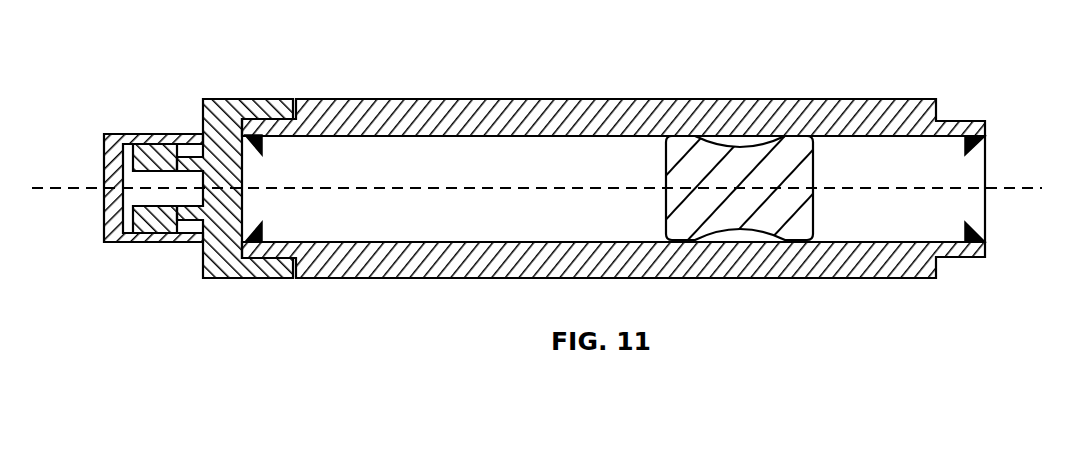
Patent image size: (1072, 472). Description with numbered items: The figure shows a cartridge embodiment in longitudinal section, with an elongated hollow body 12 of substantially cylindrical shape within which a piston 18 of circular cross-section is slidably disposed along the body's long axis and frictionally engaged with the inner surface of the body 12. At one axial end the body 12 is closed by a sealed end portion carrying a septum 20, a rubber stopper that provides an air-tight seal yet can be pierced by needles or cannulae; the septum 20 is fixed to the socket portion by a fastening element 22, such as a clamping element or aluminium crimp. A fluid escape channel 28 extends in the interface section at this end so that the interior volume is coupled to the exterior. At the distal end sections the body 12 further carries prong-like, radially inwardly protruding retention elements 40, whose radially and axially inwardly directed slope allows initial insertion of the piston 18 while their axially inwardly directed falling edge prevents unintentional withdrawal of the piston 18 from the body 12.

The body 12 is at (465, 118).
The piston 18 is at (752, 147).
The septum 20 is at (128, 145).
The fastening element 22 is at (187, 136).
The fluid escape channel 28 is at (274, 118).
The retention elements 40 is at (262, 143).